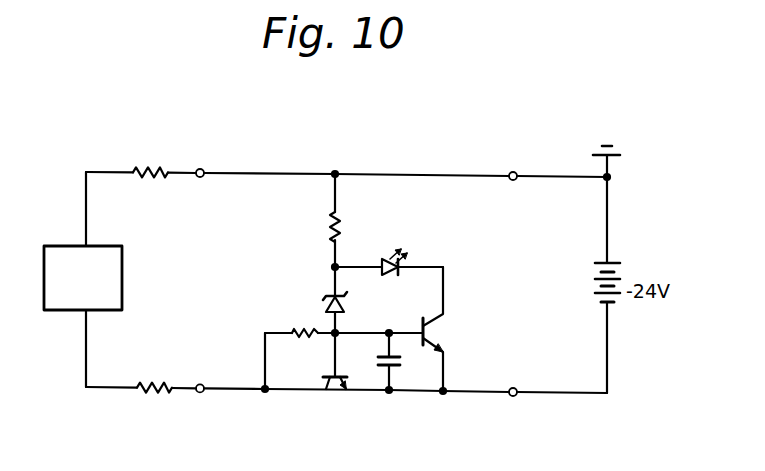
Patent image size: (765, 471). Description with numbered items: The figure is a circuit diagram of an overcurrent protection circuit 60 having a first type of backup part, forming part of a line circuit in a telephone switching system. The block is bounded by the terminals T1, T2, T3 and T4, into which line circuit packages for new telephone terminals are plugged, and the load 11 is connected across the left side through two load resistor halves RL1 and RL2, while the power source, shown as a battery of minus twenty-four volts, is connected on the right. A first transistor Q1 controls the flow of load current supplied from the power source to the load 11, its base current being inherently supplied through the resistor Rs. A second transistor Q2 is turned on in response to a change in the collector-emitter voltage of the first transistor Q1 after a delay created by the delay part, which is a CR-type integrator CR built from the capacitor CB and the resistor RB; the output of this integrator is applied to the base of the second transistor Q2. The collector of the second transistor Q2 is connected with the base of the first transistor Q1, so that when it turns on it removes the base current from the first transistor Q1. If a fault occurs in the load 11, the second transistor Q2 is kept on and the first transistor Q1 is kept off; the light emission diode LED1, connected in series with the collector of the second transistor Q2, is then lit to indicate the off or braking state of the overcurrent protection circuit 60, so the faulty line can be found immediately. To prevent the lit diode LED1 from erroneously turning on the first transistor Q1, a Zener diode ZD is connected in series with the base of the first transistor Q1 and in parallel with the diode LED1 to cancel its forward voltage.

The load 11 is at (56, 312).
The overcurrent protection circuit 60 is at (361, 200).
The terminal T1 is at (204, 168).
The terminal T2 is at (201, 384).
The terminal T3 is at (515, 171).
The terminal T4 is at (515, 387).
The load resistor half RL/2 RL1 is at (152, 178).
The load resistor half RL/2 RL2 is at (178, 408).
The resistor Rs is at (330, 227).
The Zener diode ZD is at (322, 293).
The light emission diode LED1 is at (410, 259).
The integrator CR is at (344, 323).
The resistor RB is at (313, 341).
The capacitor CB is at (417, 359).
The first transistor Q1 is at (336, 394).
The second transistor Q2 is at (438, 332).